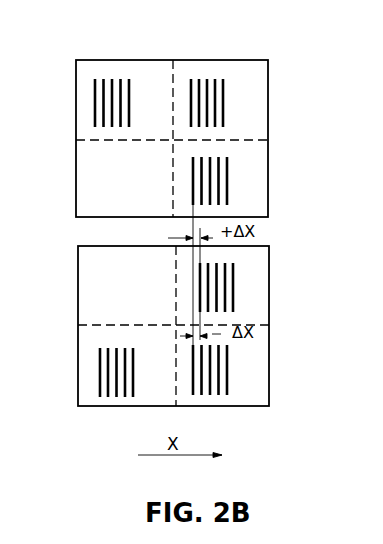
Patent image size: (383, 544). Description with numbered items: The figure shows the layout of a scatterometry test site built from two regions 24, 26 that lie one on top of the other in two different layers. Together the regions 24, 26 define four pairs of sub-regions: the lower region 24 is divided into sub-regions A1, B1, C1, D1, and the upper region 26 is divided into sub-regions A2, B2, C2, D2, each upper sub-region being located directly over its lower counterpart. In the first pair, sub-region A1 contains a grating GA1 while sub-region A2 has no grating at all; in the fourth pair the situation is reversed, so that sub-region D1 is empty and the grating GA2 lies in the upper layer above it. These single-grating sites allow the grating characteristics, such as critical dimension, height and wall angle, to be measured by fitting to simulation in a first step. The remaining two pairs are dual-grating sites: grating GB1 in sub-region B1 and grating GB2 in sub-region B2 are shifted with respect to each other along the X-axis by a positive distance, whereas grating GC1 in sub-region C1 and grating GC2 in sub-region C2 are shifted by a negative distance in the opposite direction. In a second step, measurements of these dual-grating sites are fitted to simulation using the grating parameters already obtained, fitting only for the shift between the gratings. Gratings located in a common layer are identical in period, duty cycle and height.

The region 24 is at (170, 116).
The region 26 is at (180, 340).
The sub-region A1 is at (74, 74).
The sub-region B1 is at (259, 71).
The sub-region C1 is at (261, 180).
The sub-region D1 is at (44, 179).
The sub-region A2 is at (78, 285).
The sub-region B2 is at (269, 271).
The sub-region C2 is at (265, 394).
The sub-region D2 is at (77, 399).
The grating GA1 is at (127, 60).
The grating GB1 is at (224, 100).
The grating GC1 is at (227, 180).
The grating GA2 is at (77, 372).
The grating GB2 is at (233, 287).
The grating GC2 is at (227, 368).